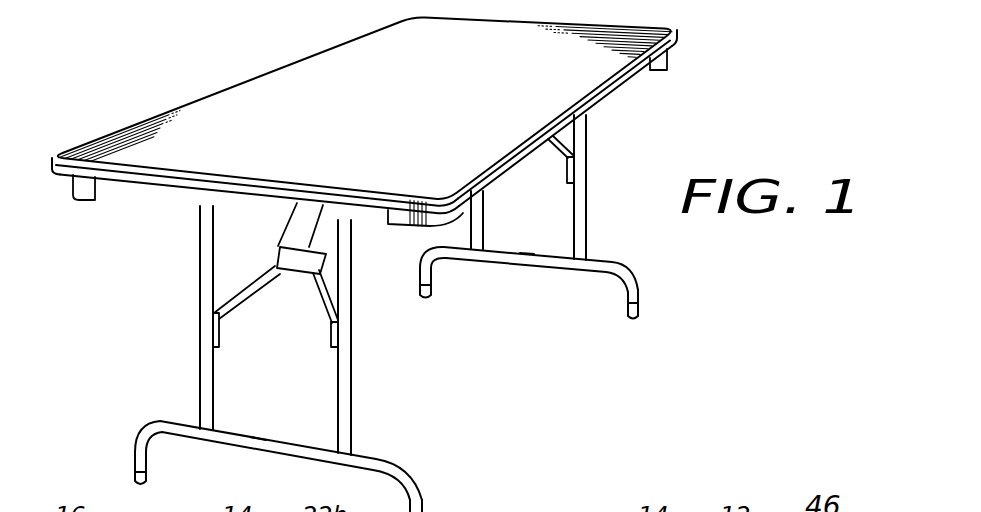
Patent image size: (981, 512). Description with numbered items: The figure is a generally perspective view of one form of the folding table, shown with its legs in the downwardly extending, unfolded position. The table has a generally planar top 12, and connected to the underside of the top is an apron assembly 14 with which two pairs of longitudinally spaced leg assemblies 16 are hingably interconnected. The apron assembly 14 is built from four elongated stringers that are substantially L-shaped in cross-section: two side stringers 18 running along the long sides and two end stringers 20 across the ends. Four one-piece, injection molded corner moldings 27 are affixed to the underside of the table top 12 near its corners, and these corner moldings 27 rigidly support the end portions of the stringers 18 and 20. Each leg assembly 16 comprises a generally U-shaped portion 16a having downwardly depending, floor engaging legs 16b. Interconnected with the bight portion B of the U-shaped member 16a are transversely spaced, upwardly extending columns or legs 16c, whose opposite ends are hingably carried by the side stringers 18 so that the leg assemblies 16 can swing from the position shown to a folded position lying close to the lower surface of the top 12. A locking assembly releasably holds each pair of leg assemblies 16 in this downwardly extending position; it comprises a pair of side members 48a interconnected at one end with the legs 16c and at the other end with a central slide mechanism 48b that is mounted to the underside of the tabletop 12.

The top 12 is at (615, 30).
The apron assembly 14 is at (645, 104).
The leg assemblies 16 is at (385, 313).
The U-shaped portion 16a is at (390, 462).
The floor engaging legs 16b is at (135, 450).
The columns 16c is at (207, 372).
The side stringers 18 is at (600, 112).
The end stringers 20 is at (163, 200).
The corner moldings 27 is at (66, 203).
The side members 48a is at (311, 296).
The central slide mechanism 48b is at (303, 228).
The bight portion B is at (264, 436).